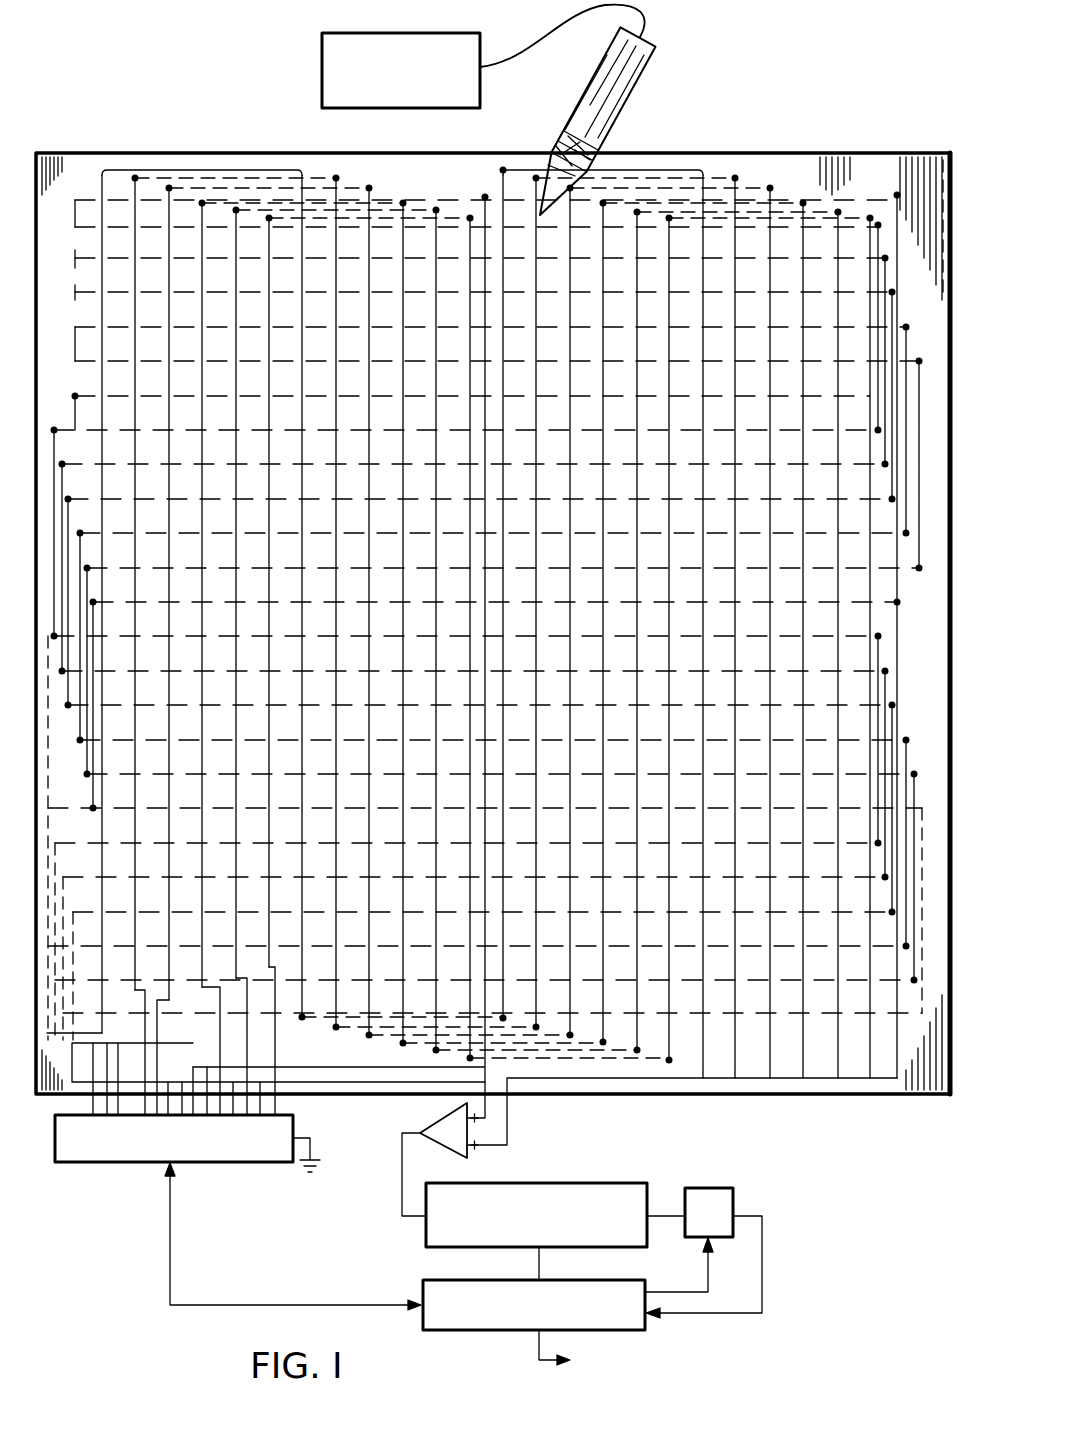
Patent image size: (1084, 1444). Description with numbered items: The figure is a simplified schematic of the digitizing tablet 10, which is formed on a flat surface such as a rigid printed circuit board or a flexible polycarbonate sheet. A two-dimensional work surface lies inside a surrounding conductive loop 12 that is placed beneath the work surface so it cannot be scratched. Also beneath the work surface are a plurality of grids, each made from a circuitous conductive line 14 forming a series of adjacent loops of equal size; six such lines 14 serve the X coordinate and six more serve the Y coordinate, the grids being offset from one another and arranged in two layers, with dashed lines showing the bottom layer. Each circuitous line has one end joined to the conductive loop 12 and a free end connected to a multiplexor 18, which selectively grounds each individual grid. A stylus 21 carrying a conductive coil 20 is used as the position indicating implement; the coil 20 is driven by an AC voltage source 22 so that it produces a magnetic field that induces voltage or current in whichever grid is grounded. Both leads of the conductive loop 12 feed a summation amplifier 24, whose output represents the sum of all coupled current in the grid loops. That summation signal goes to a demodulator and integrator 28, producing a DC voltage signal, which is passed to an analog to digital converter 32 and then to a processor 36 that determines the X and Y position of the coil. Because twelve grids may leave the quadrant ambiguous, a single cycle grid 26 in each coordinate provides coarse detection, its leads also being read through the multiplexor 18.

The digitizing tablet 10 is at (797, 1180).
The conductive loop 12 is at (75, 258).
The circuitous conductive lines 14 is at (405, 240).
The multiplexor 18 is at (245, 1165).
The conductive coil 20 is at (570, 135).
The stylus 21 is at (624, 92).
The AC voltage source 22 is at (322, 80).
The summation amplifier 24 is at (422, 1131).
The single cycle grid 26 is at (485, 235).
The demodulator and integrator 28 is at (565, 1183).
The analog to digital converter 32 is at (717, 1188).
The processor 36 is at (420, 1290).